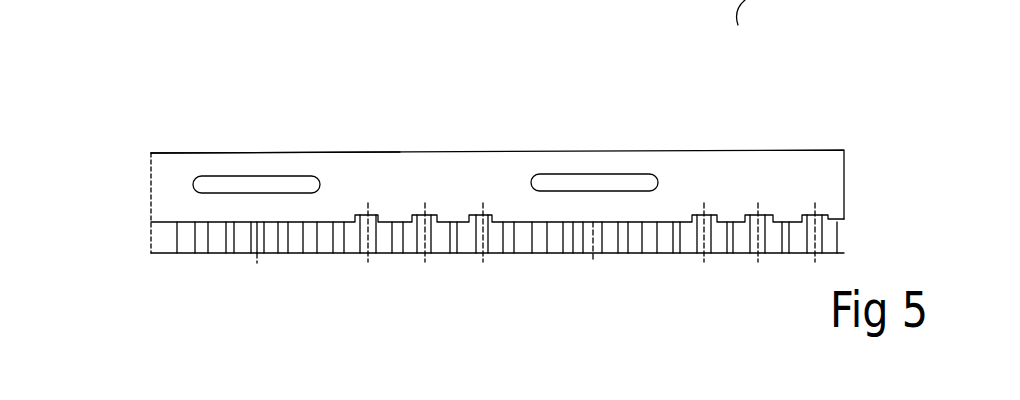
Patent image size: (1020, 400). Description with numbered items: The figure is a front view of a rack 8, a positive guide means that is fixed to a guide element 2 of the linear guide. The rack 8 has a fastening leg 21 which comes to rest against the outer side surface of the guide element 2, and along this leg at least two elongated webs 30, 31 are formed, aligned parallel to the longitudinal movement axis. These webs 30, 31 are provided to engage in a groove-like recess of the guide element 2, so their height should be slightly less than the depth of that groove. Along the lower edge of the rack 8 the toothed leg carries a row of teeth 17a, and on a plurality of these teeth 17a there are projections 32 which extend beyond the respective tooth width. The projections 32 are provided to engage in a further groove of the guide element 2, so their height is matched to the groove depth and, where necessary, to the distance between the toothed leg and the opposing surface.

The guide element 2 is at (293, 0).
The rack 8 is at (778, 152).
The fastening leg 21 is at (173, 152).
The elongated web 30 is at (658, 182).
The elongated web 31 is at (320, 183).
The projection 32 is at (844, 216).
The tooth 17a is at (303, 240).